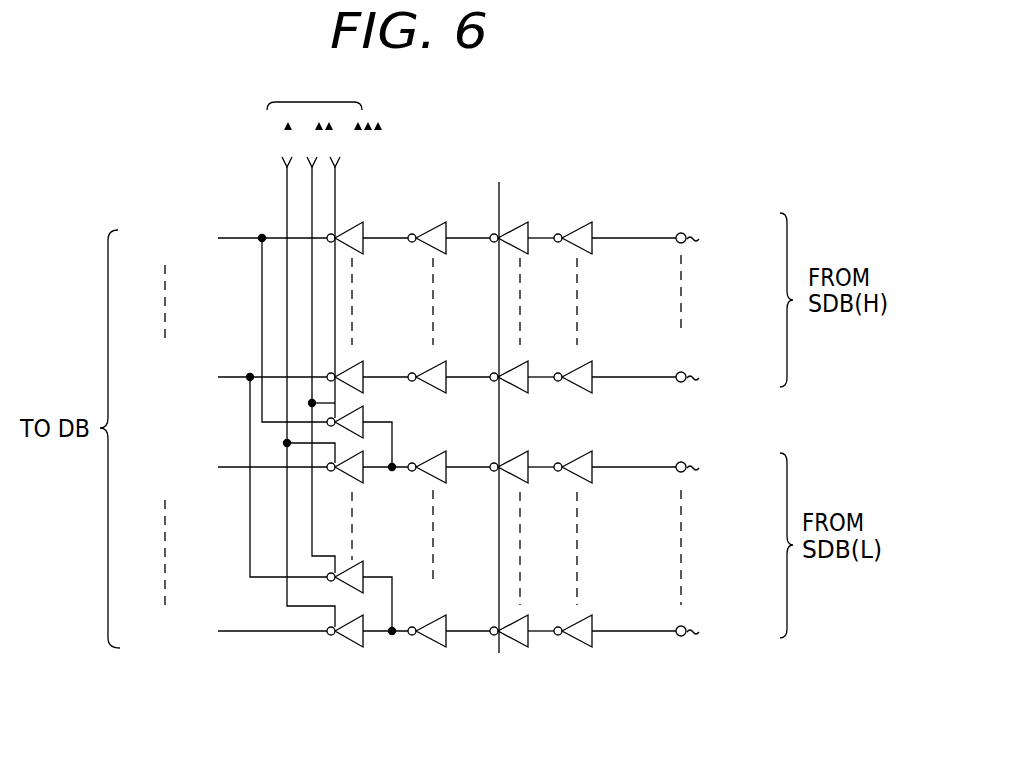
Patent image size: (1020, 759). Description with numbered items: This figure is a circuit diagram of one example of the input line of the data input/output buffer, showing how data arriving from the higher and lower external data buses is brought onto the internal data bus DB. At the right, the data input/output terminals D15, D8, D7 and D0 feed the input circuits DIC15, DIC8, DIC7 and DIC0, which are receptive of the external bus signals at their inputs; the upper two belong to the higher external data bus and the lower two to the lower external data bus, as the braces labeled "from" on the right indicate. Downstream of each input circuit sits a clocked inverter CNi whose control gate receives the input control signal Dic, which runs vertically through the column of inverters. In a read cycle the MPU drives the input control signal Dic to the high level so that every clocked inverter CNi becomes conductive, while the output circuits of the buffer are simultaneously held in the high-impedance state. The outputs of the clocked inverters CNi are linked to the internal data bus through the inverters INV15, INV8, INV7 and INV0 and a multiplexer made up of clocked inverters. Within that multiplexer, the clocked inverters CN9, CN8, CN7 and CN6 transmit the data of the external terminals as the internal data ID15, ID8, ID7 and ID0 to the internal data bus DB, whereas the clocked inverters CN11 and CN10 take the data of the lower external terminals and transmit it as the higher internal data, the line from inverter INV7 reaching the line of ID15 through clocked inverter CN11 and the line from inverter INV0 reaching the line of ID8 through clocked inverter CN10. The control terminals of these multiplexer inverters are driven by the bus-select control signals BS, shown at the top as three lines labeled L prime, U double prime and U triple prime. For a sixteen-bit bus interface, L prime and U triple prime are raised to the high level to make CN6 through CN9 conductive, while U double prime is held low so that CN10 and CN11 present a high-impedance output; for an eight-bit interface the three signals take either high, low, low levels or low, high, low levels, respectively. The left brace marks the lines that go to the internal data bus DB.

The control signal BS is at (324, 349).
The internal data ID15 is at (231, 324).
The internal data ID8 is at (231, 471).
The internal data ID7 is at (231, 471).
The internal data ID0 is at (231, 635).
The clocked inverter CN9 is at (367, 225).
The clocked inverter CN8 is at (367, 363).
The clocked inverter CN7 is at (367, 480).
The clocked inverter CN6 is at (367, 648).
The clocked inverter CN10 is at (373, 587).
The clocked inverter CN11 is at (371, 433).
The inverter INV15 is at (447, 225).
The inverter INV8 is at (449, 366).
The inverter INV7 is at (449, 452).
The inverter INV0 is at (445, 618).
The clocked inverter CNi is at (522, 420).
The input control signal Dic is at (500, 403).
The input circuit DIC15 is at (615, 224).
The input circuit DIC8 is at (615, 365).
The input circuit DIC7 is at (615, 454).
The input circuit DIC0 is at (615, 616).
The data input/output terminal D15 is at (711, 242).
The data input/output terminal D8 is at (704, 381).
The data input/output terminal D7 is at (705, 471).
The data input/output terminal D0 is at (702, 635).